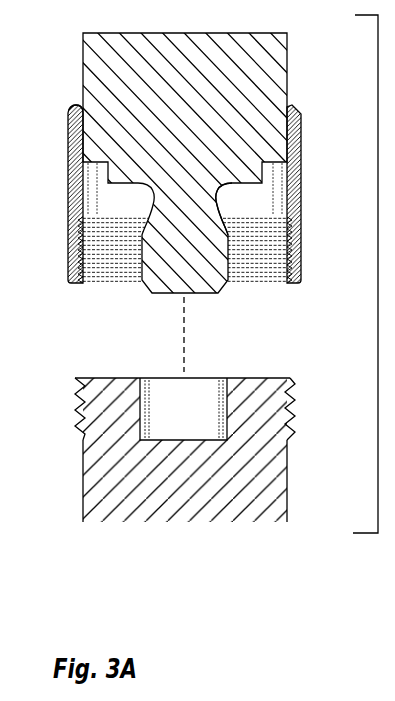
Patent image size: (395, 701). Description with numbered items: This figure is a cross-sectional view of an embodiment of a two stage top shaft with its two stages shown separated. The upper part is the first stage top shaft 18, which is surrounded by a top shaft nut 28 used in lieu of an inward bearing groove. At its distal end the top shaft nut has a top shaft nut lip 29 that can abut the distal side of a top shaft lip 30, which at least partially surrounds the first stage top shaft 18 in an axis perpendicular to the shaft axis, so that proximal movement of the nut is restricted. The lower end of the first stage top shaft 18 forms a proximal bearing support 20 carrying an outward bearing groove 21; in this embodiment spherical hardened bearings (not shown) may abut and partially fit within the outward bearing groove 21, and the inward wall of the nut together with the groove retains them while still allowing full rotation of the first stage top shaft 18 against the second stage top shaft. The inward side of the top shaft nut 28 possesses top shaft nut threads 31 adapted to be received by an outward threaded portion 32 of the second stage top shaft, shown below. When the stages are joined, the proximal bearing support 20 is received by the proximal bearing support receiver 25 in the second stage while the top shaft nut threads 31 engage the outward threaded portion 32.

The first stage top shaft 18 is at (288, 87).
The proximal bearing support 20 is at (227, 253).
The outward bearing groove 21 is at (217, 203).
The proximal bearing support receiver 25 is at (158, 437).
The top shaft nut 28 is at (300, 152).
The top shaft nut lip 29 is at (78, 105).
The top shaft lip 30 is at (87, 117).
The top shaft nut threads 31 is at (128, 235).
The outward threaded portion 32 is at (288, 402).